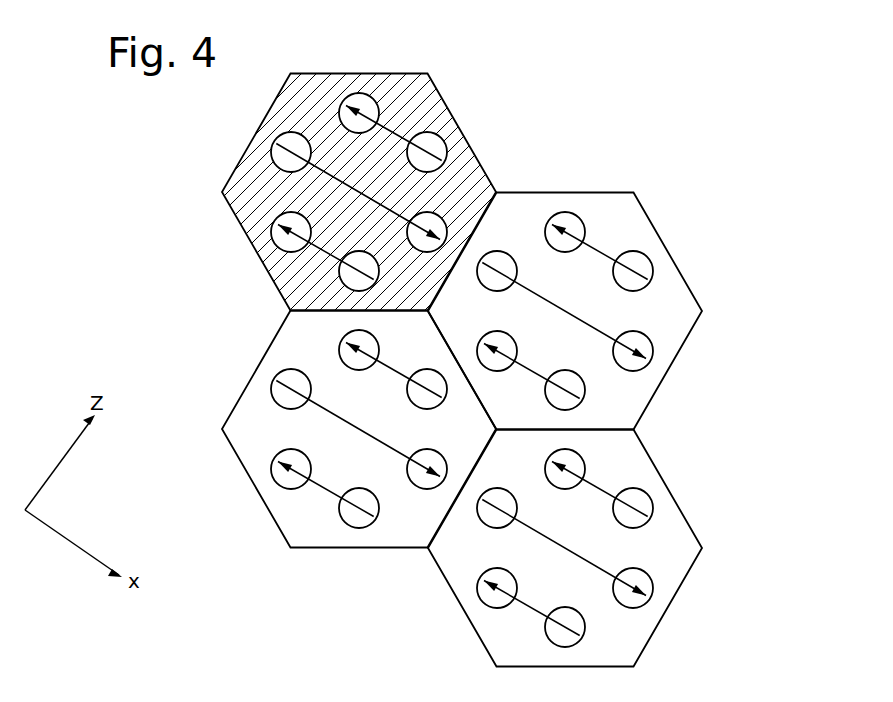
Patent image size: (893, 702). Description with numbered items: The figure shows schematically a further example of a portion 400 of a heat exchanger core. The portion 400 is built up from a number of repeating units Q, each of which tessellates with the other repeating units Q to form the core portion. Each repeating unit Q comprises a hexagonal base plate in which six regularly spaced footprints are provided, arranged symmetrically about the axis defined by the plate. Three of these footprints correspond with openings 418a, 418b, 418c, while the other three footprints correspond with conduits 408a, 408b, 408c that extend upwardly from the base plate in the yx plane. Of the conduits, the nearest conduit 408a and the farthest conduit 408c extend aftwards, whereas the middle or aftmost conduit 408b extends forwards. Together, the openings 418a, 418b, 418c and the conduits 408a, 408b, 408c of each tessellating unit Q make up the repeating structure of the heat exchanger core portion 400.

The portion of a heat exchanger core 400 is at (705, 228).
The repeating unit Q is at (459, 94).
The opening 418c is at (357, 97).
The conduit 408c is at (428, 143).
The opening 418b is at (432, 222).
The conduit 408b is at (282, 156).
The opening 418a is at (278, 233).
The conduit 408a is at (352, 277).